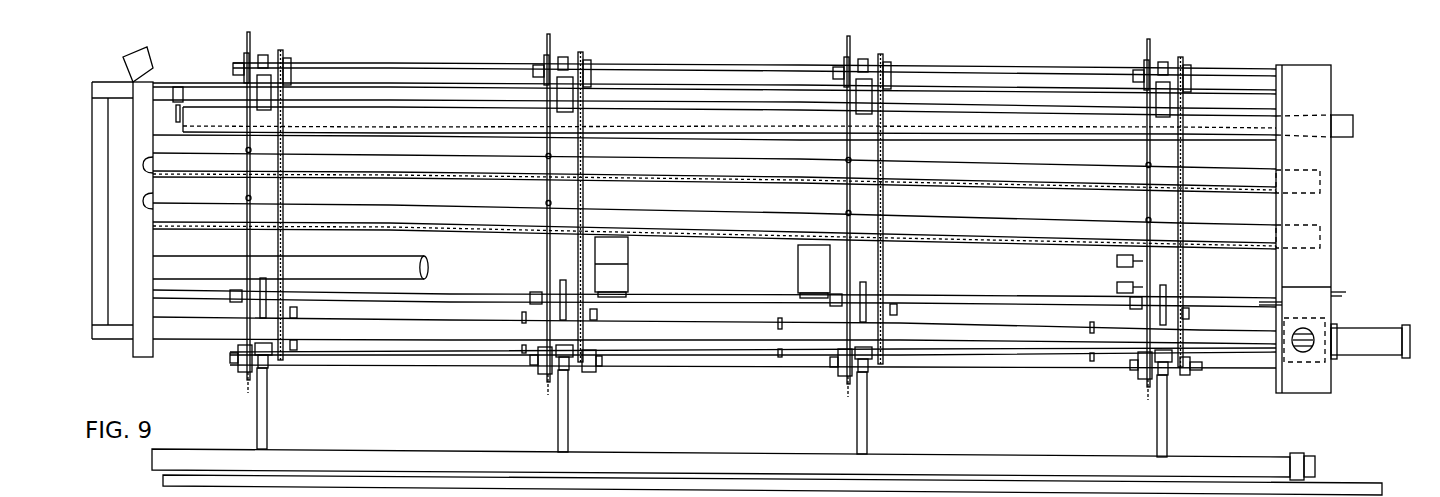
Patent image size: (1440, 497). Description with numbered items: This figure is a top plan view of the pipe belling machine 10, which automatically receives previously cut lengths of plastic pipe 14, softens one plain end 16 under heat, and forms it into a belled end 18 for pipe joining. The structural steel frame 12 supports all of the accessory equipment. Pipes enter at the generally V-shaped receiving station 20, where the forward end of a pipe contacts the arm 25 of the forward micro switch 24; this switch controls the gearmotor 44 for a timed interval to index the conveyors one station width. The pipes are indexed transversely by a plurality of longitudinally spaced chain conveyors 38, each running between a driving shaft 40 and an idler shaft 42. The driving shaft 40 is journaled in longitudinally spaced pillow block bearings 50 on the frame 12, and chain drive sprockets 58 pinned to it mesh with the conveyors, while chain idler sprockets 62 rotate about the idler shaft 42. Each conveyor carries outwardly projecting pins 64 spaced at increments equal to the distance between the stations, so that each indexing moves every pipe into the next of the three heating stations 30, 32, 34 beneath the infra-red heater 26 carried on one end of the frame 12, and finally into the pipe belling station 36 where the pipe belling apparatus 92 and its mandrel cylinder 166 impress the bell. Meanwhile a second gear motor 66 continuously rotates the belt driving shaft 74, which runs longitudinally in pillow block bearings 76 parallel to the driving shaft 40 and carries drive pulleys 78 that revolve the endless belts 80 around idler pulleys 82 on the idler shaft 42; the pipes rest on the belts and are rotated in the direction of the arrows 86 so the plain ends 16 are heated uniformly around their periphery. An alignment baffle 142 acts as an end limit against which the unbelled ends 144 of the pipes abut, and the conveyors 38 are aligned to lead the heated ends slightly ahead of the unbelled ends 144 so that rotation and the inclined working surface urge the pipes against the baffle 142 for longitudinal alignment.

The pipe belling machine 10 is at (205, 352).
The structural steel frame 12 is at (92, 292).
The plastic pipe 14 is at (400, 115).
The plain end 16 is at (1325, 253).
The belled end 18 is at (1305, 458).
The receiving station 20 is at (355, 100).
The forward micro switch 24 is at (178, 87).
The arm of the micro switch 25 is at (178, 115).
The infra-red heater 26 is at (1325, 165).
The heating station 30 is at (1248, 180).
The heating station 32 is at (1242, 250).
The heating station 34 is at (1272, 306).
The pipe belling station 36 is at (1320, 368).
The chain conveyor 38 is at (246, 196).
The driving shaft 40 is at (665, 368).
The idler shaft 42 is at (762, 40).
The gearmotor 44 is at (628, 267).
The pillow block bearing 50 is at (266, 364).
The chain drive sprocket 58 is at (240, 362).
The chain idler sprocket 62 is at (247, 56).
The pin 64 is at (252, 152).
The second gear motor 66 is at (798, 274).
The belt driving shaft 74 is at (1002, 295).
The pillow block bearing 76 is at (260, 295).
The drive pulley 78 is at (297, 312).
The endless belt 80 is at (291, 190).
The idler pulley 82 is at (291, 62).
The arrows 86 is at (297, 345).
The pipe belling apparatus 92 is at (1331, 297).
The alignment baffle 142 is at (140, 240).
The unbelled end 144 is at (170, 183).
The cylinder 166 is at (1353, 355).